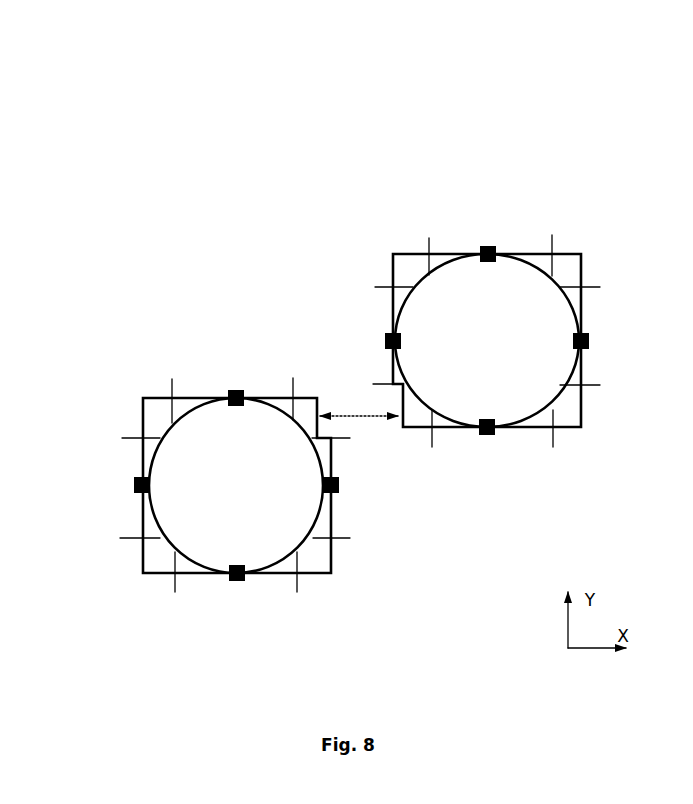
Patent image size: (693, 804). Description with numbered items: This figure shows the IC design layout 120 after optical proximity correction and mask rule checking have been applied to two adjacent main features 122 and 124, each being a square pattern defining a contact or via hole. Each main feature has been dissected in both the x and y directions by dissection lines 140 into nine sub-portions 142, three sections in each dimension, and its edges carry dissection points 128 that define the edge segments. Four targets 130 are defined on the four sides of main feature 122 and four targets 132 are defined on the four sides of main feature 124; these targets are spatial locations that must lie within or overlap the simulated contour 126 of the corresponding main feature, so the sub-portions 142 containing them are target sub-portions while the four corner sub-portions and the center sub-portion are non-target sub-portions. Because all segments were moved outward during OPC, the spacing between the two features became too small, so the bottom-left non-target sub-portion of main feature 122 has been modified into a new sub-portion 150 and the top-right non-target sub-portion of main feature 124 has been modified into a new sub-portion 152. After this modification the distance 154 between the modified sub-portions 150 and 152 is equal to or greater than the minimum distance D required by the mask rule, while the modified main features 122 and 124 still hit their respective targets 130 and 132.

The IC design layout 120 is at (473, 135).
The main feature 122 is at (587, 415).
The main feature 124 is at (309, 577).
The simulated contour 126 is at (544, 279).
The dissection points 128 is at (292, 427).
The targets 130 is at (490, 244).
The targets 132 is at (237, 393).
The dissection lines 140 is at (172, 377).
The sub-portions 142 is at (565, 414).
The modified sub-portion 150 is at (407, 419).
The modified sub-portion 152 is at (307, 408).
The distance 154 is at (359, 404).